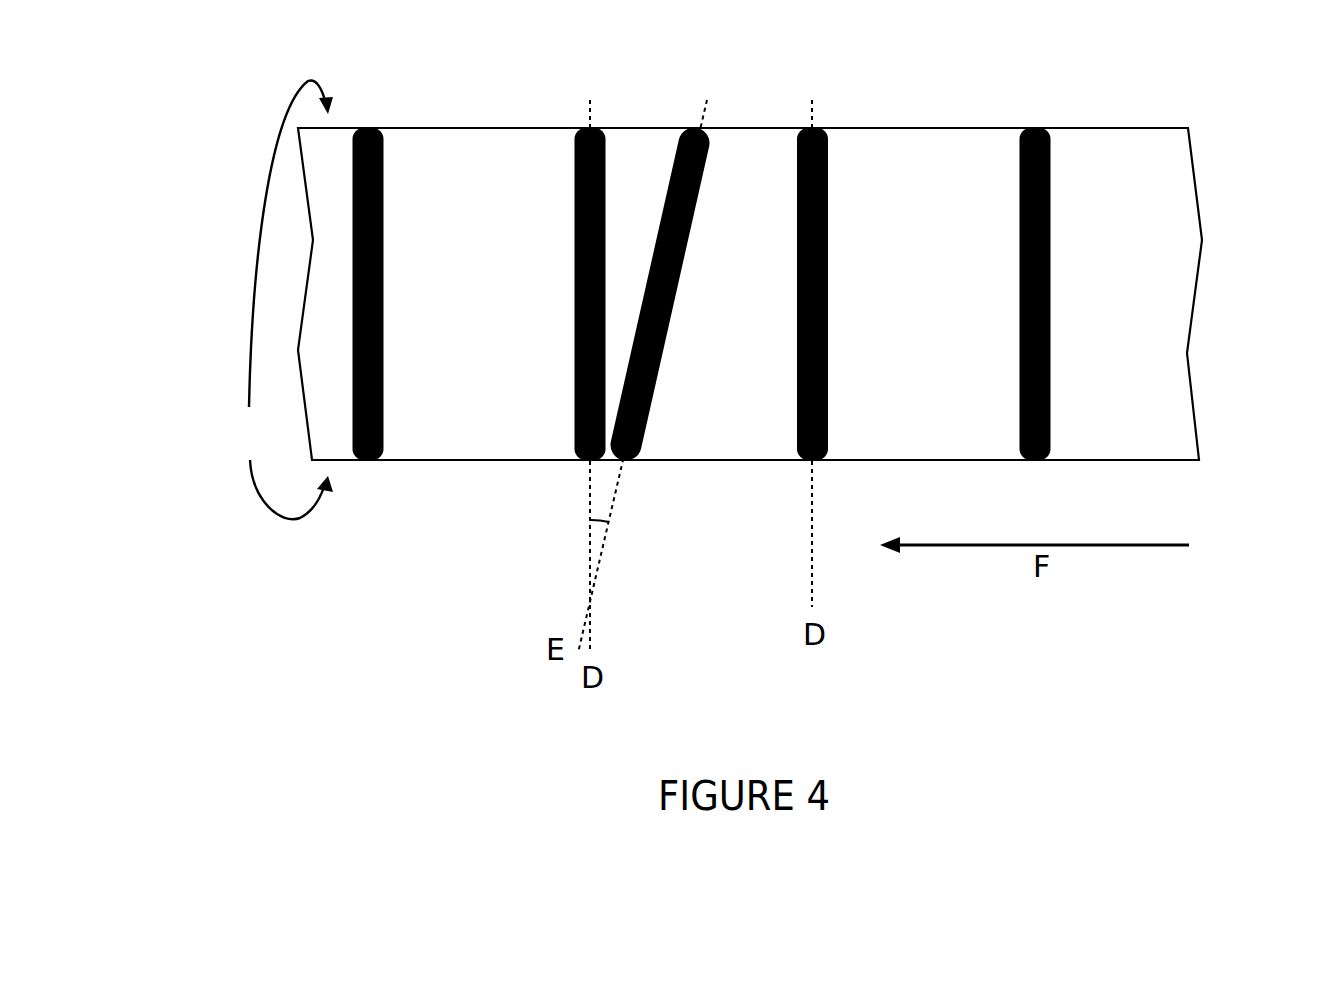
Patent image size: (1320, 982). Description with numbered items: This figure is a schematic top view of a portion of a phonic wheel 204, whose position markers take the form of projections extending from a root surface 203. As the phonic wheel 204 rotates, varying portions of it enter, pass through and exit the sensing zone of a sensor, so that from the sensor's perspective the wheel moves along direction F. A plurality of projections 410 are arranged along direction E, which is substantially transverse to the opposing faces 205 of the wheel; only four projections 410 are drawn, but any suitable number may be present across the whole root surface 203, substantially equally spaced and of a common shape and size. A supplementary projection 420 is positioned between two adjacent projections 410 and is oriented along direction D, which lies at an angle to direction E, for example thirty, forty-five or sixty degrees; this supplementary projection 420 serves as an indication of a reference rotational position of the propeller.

The root surface 203 is at (1132, 378).
The phonic wheel 204 is at (190, 319).
The opposing faces 205 is at (269, 468).
The projections 410 is at (575, 296).
The supplementary projection 420 is at (696, 128).